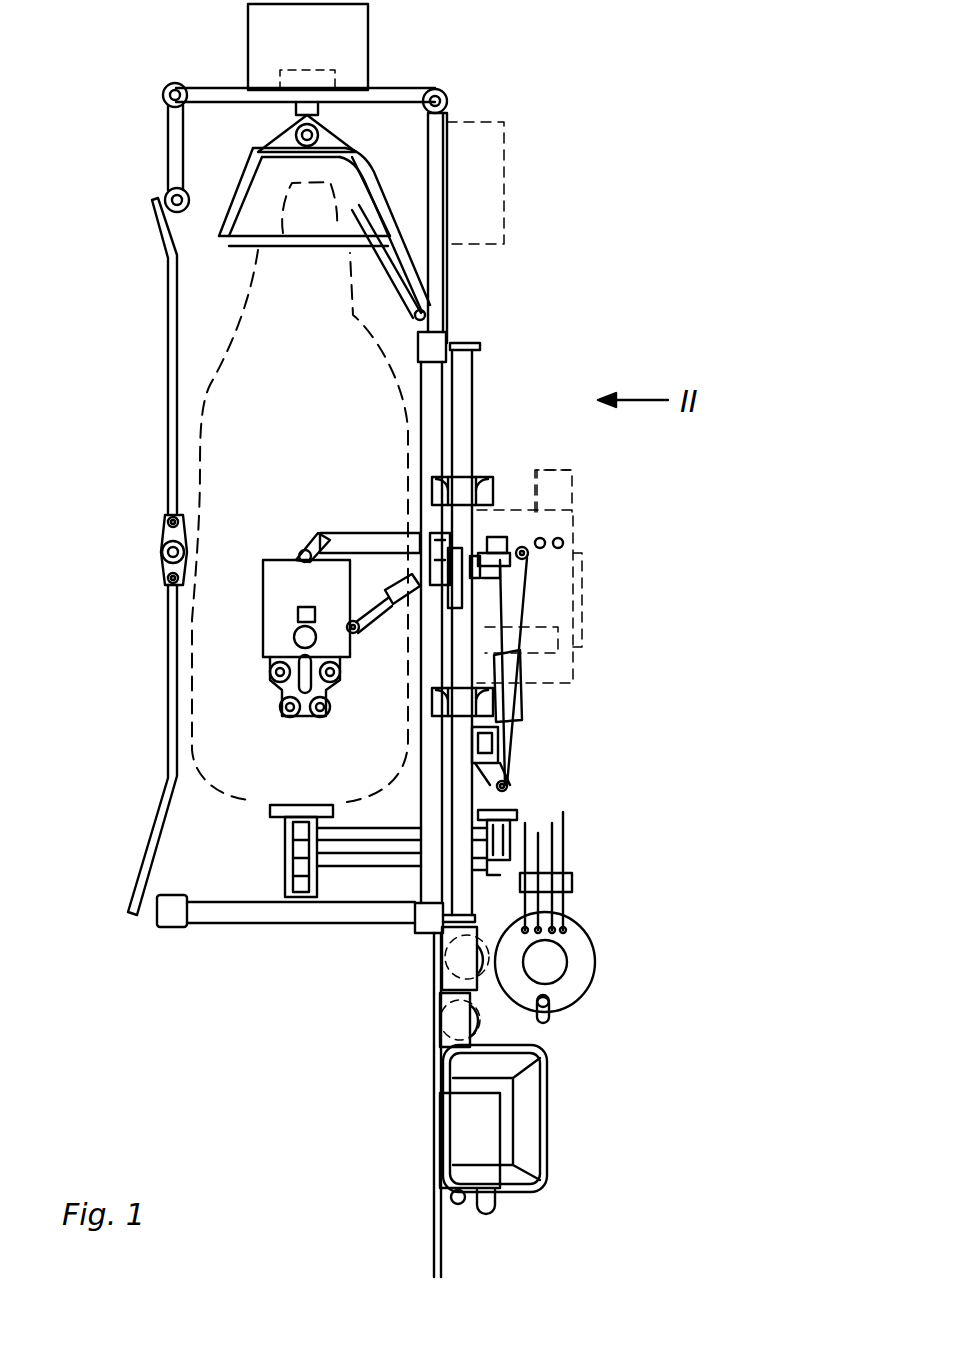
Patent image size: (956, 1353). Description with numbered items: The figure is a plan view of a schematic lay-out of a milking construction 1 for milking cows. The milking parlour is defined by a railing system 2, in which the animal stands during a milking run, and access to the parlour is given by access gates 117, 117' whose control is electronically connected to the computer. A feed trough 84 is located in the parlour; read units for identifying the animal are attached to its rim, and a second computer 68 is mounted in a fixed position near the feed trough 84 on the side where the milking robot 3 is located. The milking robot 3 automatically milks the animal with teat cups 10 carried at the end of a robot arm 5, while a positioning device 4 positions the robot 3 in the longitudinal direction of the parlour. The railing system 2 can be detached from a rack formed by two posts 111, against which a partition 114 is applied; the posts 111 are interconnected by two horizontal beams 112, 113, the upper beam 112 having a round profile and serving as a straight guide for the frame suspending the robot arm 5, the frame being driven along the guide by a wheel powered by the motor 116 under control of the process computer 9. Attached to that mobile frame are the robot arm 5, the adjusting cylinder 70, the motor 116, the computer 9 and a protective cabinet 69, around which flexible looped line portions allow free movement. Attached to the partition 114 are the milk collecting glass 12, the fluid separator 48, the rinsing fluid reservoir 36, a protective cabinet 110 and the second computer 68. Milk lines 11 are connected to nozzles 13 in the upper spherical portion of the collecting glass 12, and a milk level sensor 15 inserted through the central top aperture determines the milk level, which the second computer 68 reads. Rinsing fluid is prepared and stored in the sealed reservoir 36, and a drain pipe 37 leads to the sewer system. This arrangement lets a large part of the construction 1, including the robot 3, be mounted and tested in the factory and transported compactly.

The milking construction 1 is at (578, 352).
The railing system 2 is at (205, 100).
The milking robot 3 is at (522, 733).
The positioning device 4 is at (521, 810).
The robot arm 5 is at (340, 538).
The process computer 9 is at (576, 526).
The teat cups 10 is at (278, 703).
The milk lines 11 is at (565, 855).
The milk collecting glass 12 is at (597, 964).
The nozzles 13 is at (568, 930).
The milk level sensor 15 is at (555, 972).
The rinsing fluid reservoir 36 is at (545, 1128).
The drain pipe 37 is at (487, 1212).
The fluid separator 48 is at (484, 942).
The second computer 68 is at (505, 168).
The protective cabinet 69 is at (556, 468).
The adjusting cylinder 70 is at (492, 742).
The feed trough 84 is at (243, 247).
The protective cabinet 110 is at (452, 1143).
The posts 111 is at (432, 340).
The upper beam 112 is at (452, 650).
The beam 113 is at (426, 402).
The partition 114 is at (437, 1022).
The motor 116 is at (440, 545).
The access gate 117 is at (115, 750).
The access gate 117' is at (126, 391).